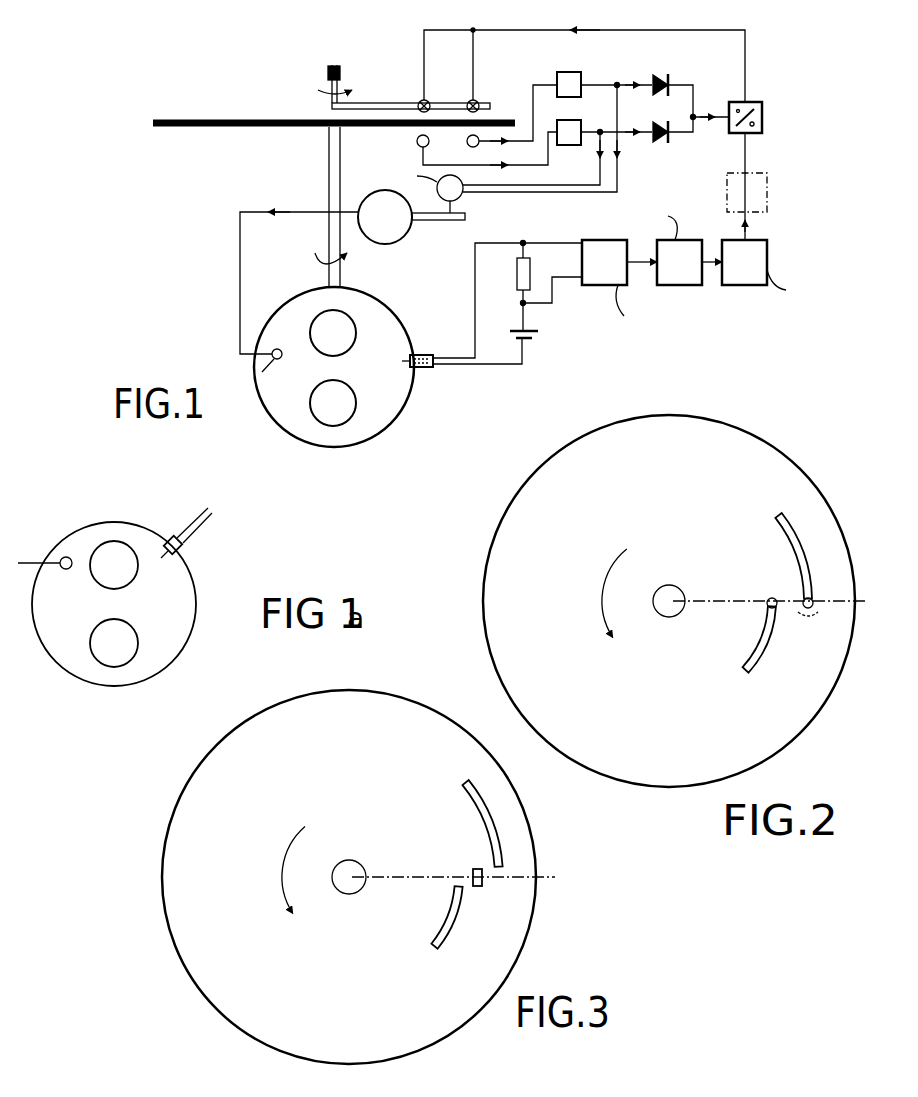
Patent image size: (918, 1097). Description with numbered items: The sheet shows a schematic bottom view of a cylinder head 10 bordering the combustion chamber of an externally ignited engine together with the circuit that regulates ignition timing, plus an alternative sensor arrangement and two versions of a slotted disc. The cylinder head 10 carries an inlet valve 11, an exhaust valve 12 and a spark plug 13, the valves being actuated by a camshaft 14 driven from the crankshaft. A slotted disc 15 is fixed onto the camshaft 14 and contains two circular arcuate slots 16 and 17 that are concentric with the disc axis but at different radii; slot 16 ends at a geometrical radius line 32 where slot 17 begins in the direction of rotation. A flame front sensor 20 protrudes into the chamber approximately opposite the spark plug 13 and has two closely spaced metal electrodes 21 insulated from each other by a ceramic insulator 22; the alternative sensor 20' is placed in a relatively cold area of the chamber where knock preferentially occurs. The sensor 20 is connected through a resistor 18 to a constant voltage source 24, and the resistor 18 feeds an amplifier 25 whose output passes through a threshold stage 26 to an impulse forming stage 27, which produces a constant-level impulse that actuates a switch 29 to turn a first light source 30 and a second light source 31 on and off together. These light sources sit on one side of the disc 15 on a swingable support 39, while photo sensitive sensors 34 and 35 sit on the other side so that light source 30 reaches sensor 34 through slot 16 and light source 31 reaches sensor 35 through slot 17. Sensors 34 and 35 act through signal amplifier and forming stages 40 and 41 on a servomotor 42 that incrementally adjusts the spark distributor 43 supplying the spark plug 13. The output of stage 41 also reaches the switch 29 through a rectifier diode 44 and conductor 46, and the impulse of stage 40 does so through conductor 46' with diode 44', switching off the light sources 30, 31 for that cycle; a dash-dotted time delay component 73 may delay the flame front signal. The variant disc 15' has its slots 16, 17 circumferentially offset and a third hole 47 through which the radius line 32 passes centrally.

In FIG. 1, the cylinder head 10 is at (310, 449).
In FIG. 1A, the cylinder head 10 is at (187, 649).
In FIG. 1, the inlet valve 11 is at (343, 328).
In FIG. 1A, the inlet valve 11 is at (117, 548).
In FIG. 1, the exhaust valve 12 is at (322, 410).
In FIG. 1A, the exhaust valve 12 is at (110, 658).
In FIG. 1, the spark plug 13 is at (257, 374).
In FIG. 1A, the spark plug 13 is at (66, 557).
In FIG. 1, the camshaft 14 is at (330, 236).
In FIG. 2, the camshaft 14 is at (664, 615).
In FIG. 3, the camshaft 14 is at (418, 869).
In FIG. 1, the slotted disc 15 is at (334, 149).
In FIG. 2, the slotted disc 15 is at (635, 601).
In FIG. 3, the slotted disc 15' is at (325, 877).
In FIG. 2, the arcuate slot 16 is at (760, 657).
In FIG. 3, the arcuate slot 16 is at (440, 934).
In FIG. 2, the arcuate slot 17 is at (790, 535).
In FIG. 3, the arcuate slot 17 is at (480, 805).
In FIG. 1, the resistor 18 is at (517, 275).
In FIG. 1, the flame front sensor 20 is at (425, 388).
In FIG. 1A, the flame front sensor 20' is at (202, 542).
In FIG. 1, the metal electrodes 21 is at (408, 366).
In FIG. 1, the ceramic insulator 22 is at (424, 352).
In FIG. 1, the constant voltage source 24 is at (538, 340).
In FIG. 1, the amplifier 25 is at (647, 284).
In FIG. 1, the threshold stage 26 is at (640, 244).
In FIG. 1, the impulse forming stage 27 is at (794, 279).
In FIG. 1, the switch 29 is at (752, 135).
In FIG. 1, the first light source 30 is at (422, 99).
In FIG. 2, the first light source 30 is at (768, 600).
In FIG. 1, the second light source 31 is at (478, 99).
In FIG. 2, the second light source 31 is at (812, 612).
In FIG. 2, the radius line 32 is at (752, 600).
In FIG. 3, the radius line 32 is at (523, 880).
In FIG. 1, the photo sensitive sensor 34 is at (417, 144).
In FIG. 1, the photo sensitive sensor 35 is at (467, 144).
In FIG. 1, the support 39 is at (372, 97).
In FIG. 1, the signal amplifier and forming stage 40 is at (570, 145).
In FIG. 1, the signal amplifier and forming stage 41 is at (570, 72).
In FIG. 1, the servomotor 42 is at (460, 200).
In FIG. 1, the spark distributor 43 is at (405, 232).
In FIG. 1, the rectifier diode 44 is at (638, 70).
In FIG. 1, the rectifier diode 44' is at (630, 151).
In FIG. 1, the conductor 46 is at (702, 82).
In FIG. 1, the conductor 46' is at (701, 149).
In FIG. 3, the third hole 47 is at (473, 870).
In FIG. 1, the time delay component 73 is at (765, 207).